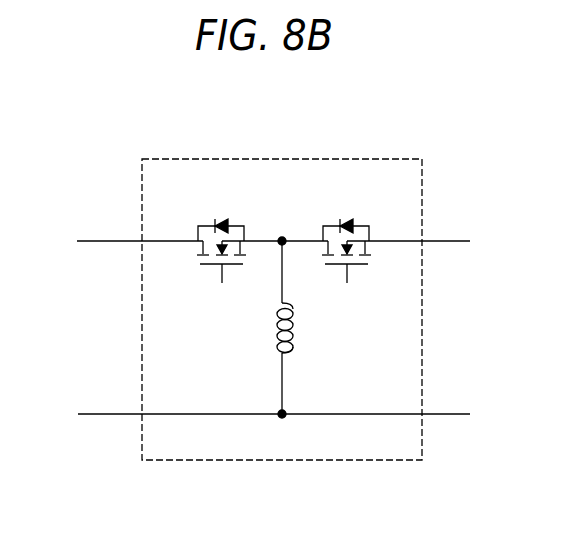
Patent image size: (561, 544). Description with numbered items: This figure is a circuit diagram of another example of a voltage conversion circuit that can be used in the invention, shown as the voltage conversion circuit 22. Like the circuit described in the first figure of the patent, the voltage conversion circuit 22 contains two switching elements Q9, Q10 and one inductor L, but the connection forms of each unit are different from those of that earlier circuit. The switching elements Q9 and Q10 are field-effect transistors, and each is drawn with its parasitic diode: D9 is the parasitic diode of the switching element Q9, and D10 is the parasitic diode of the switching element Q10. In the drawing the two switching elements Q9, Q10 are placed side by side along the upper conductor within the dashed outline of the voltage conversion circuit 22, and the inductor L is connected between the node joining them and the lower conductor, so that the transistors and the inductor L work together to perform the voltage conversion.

The voltage conversion circuit 22 is at (355, 158).
The switching element Q9 is at (218, 266).
The parasitic diode D9 is at (221, 221).
The switching element Q10 is at (353, 266).
The parasitic diode D10 is at (346, 221).
The inductor L is at (293, 327).